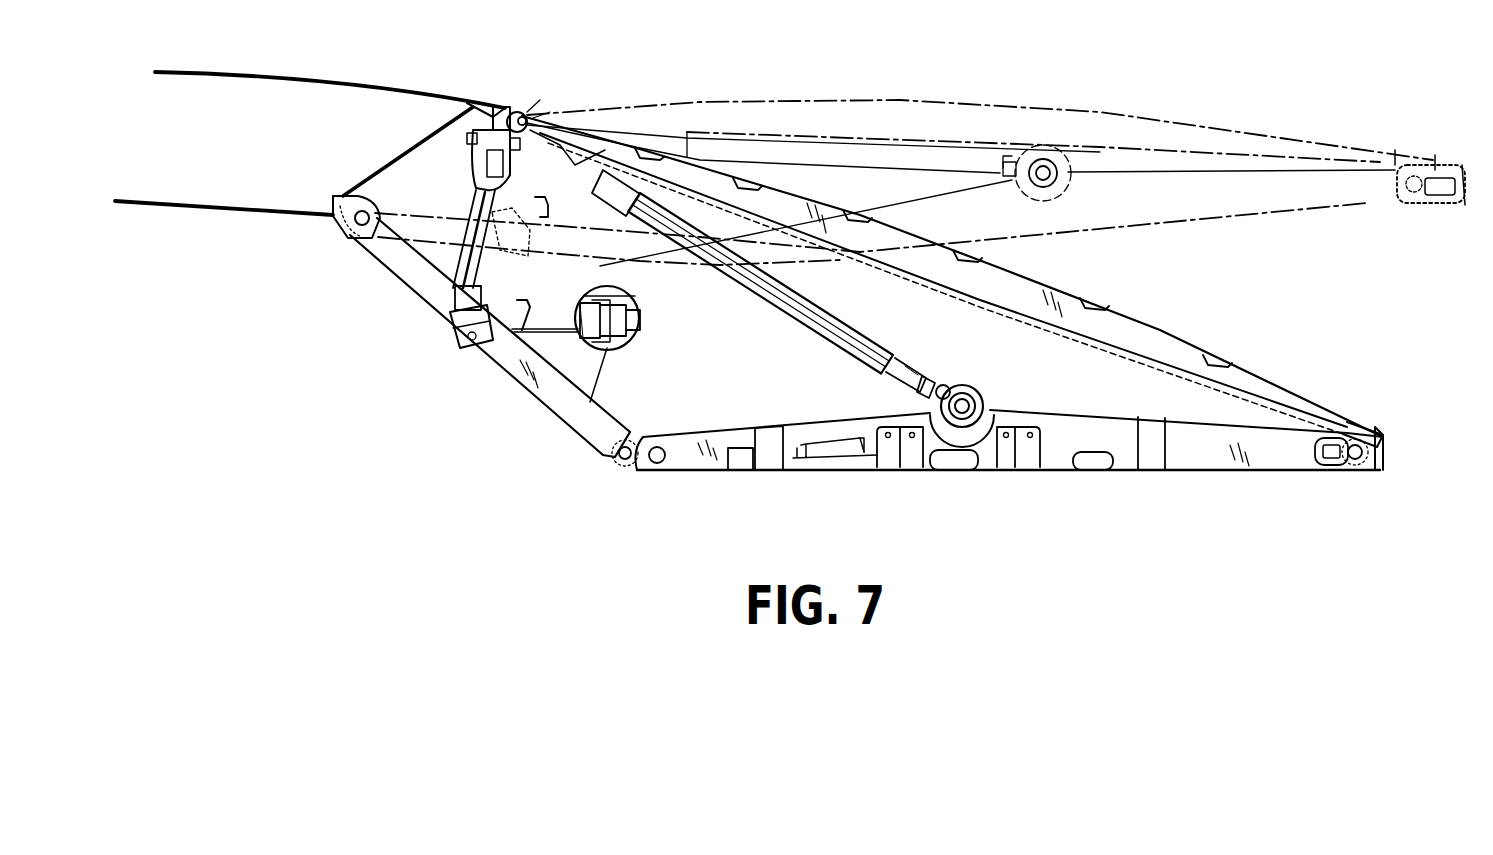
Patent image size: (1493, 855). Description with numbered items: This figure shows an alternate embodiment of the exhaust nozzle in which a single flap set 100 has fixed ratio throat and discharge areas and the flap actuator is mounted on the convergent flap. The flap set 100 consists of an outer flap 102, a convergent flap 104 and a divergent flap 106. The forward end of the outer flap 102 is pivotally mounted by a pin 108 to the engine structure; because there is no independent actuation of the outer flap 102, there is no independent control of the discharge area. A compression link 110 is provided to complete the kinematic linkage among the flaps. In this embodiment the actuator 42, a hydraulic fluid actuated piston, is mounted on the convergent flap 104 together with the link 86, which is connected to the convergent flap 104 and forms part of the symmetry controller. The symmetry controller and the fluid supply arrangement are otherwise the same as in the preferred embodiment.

The flap set 100 is at (1075, 92).
The pin 108 is at (528, 116).
The link 86 is at (486, 275).
The convergent flap 104 is at (533, 380).
The actuator 42 is at (638, 326).
The divergent flap 106 is at (1209, 462).
The outer flap 102 is at (1153, 334).
The compression link 110 is at (866, 337).